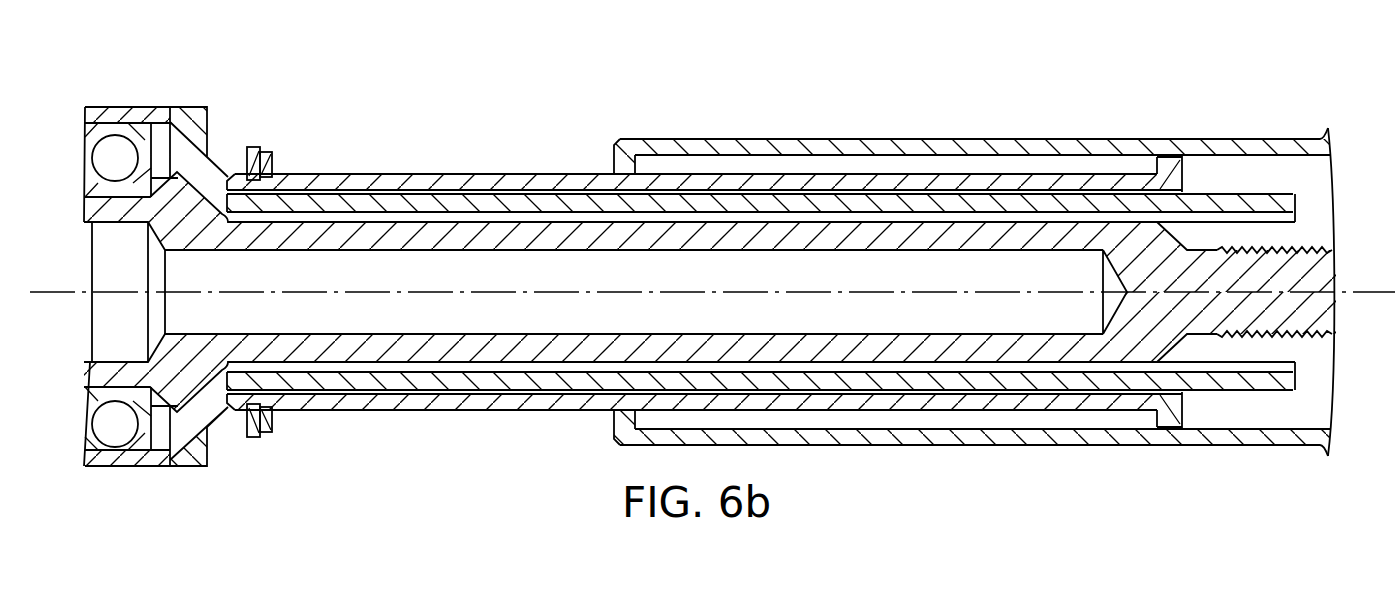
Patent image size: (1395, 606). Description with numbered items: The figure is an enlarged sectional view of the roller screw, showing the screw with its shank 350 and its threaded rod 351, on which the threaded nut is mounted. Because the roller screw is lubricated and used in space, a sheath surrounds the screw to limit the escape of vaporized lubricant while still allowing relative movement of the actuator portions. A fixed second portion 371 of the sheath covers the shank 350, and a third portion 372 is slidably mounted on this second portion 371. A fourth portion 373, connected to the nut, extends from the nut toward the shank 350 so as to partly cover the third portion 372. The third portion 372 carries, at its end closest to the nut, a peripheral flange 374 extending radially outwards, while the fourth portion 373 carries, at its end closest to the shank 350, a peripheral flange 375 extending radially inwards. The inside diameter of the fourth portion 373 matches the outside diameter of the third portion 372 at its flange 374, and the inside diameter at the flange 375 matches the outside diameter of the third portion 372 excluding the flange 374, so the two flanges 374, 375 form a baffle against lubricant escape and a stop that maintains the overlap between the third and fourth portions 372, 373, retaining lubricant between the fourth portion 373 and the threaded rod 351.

The shank 350 is at (497, 347).
The threaded rod 351 is at (1255, 248).
The second portion 371 is at (471, 189).
The third portion 372 is at (353, 168).
The fourth portion 373 is at (648, 131).
The peripheral flange 374 is at (1153, 147).
The peripheral flange 375 is at (609, 143).